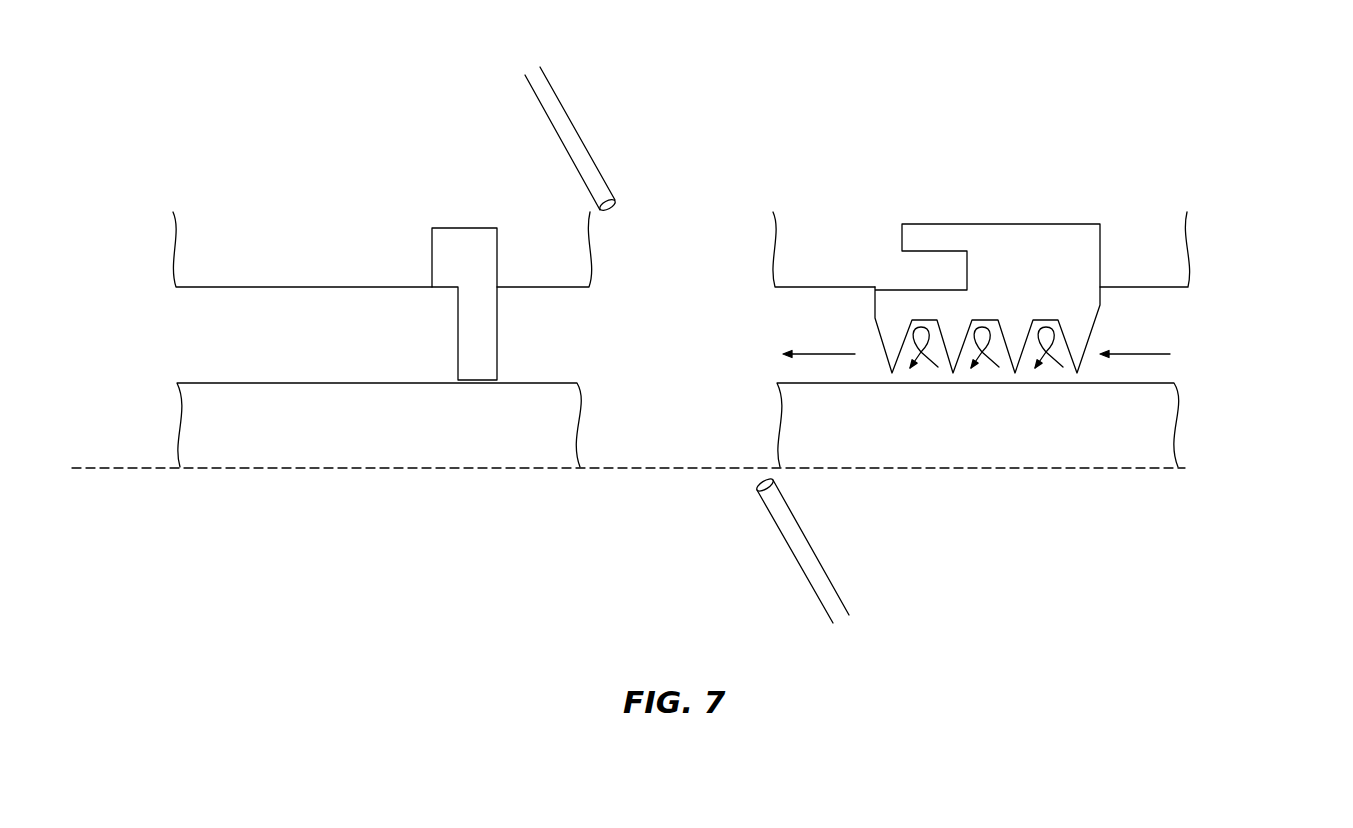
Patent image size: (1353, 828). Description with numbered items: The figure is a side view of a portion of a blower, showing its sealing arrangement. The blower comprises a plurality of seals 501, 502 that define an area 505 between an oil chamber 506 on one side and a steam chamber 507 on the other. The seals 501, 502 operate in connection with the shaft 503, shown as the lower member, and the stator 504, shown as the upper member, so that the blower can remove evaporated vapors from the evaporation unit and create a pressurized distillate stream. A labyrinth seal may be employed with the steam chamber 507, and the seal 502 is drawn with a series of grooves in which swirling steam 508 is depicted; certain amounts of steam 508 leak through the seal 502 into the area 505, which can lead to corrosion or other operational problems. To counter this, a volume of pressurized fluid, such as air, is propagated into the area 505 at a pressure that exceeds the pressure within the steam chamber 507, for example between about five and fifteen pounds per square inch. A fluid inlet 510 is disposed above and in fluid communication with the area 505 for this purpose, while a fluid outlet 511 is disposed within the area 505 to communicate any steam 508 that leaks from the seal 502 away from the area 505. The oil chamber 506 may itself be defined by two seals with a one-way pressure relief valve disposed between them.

The seal 501 is at (465, 243).
The seal 502 is at (1048, 242).
The shaft 503 is at (315, 447).
The stator 504 is at (215, 227).
The area 505 is at (668, 242).
The oil chamber 506 is at (183, 340).
The steam chamber 507 is at (1247, 292).
The steam 508 is at (993, 363).
The fluid inlet 510 is at (557, 113).
The fluid outlet 511 is at (807, 567).